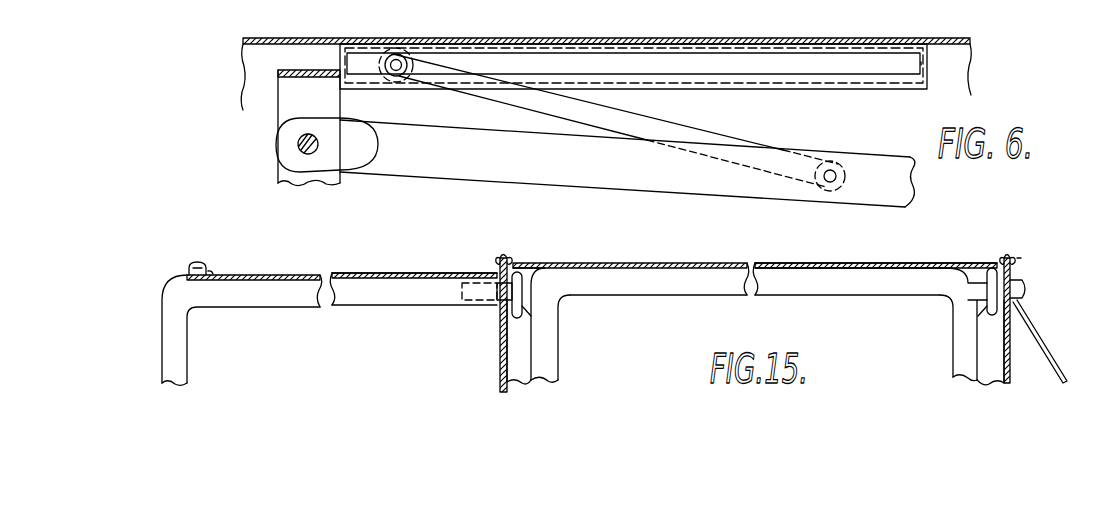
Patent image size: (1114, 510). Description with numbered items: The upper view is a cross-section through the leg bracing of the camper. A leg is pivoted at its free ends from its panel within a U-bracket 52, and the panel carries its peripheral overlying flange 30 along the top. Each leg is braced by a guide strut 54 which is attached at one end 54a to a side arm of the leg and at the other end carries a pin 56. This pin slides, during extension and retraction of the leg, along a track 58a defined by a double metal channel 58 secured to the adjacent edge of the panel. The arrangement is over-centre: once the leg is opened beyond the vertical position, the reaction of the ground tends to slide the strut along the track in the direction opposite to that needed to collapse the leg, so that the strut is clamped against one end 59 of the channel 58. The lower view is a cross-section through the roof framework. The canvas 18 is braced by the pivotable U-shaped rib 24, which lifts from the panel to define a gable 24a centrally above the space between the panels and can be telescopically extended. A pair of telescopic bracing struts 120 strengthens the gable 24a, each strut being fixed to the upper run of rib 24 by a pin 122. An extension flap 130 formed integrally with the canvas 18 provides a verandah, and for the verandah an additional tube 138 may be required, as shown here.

In FIG. 6, the peripheral overlying flange 30 is at (545, 39).
In FIG. 6, the U-bracket 52 is at (288, 117).
In FIG. 6, the guide strut 54 is at (690, 128).
In FIG. 6, the strut end 54a is at (835, 168).
In FIG. 6, the pin 56 is at (396, 58).
In FIG. 6, the double metal channel 58 is at (771, 50).
In FIG. 6, the track 58a is at (661, 68).
In FIG. 6, the channel end 59 is at (921, 62).
In FIG. 15, the extension flap 130 is at (383, 274).
In FIG. 15, the additional tube 138 is at (275, 294).
In FIG. 15, the gable 24a is at (603, 263).
In FIG. 15, the canvas 18 is at (665, 263).
In FIG. 15, the pivotable U-shaped rib 24 is at (613, 285).
In FIG. 15, the telescopic bracing strut 120 is at (518, 358).
In FIG. 15, the pin 122 is at (498, 310).